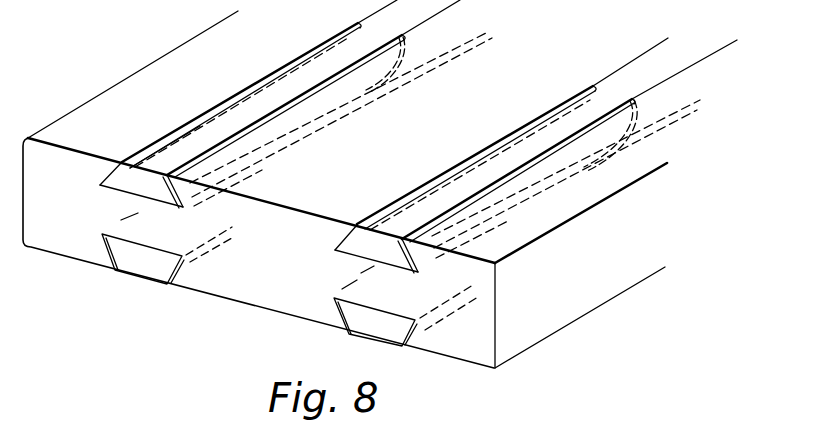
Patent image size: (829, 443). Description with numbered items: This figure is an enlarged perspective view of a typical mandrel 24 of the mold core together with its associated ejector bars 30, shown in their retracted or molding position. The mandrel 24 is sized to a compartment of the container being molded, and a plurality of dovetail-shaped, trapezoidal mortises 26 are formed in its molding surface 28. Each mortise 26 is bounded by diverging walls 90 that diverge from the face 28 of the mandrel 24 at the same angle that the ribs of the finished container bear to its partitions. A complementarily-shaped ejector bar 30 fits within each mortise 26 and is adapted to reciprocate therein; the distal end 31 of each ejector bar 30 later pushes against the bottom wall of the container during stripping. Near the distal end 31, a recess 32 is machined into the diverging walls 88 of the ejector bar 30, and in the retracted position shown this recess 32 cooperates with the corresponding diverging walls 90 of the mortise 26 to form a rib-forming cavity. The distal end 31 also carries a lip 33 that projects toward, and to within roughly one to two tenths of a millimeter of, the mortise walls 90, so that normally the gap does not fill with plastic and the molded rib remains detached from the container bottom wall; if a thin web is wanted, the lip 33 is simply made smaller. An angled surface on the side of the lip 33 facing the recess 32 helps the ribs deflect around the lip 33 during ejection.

The mandrel 24 is at (555, 308).
The mortise 26 is at (338, 159).
The molding surface 28 is at (318, 193).
The ejector bar 30 is at (278, 92).
The distal end 31 is at (145, 192).
The recess 32 is at (358, 23).
The lip 33 is at (163, 168).
The diverging walls 88 is at (450, 32).
The diverging walls 90 is at (116, 181).